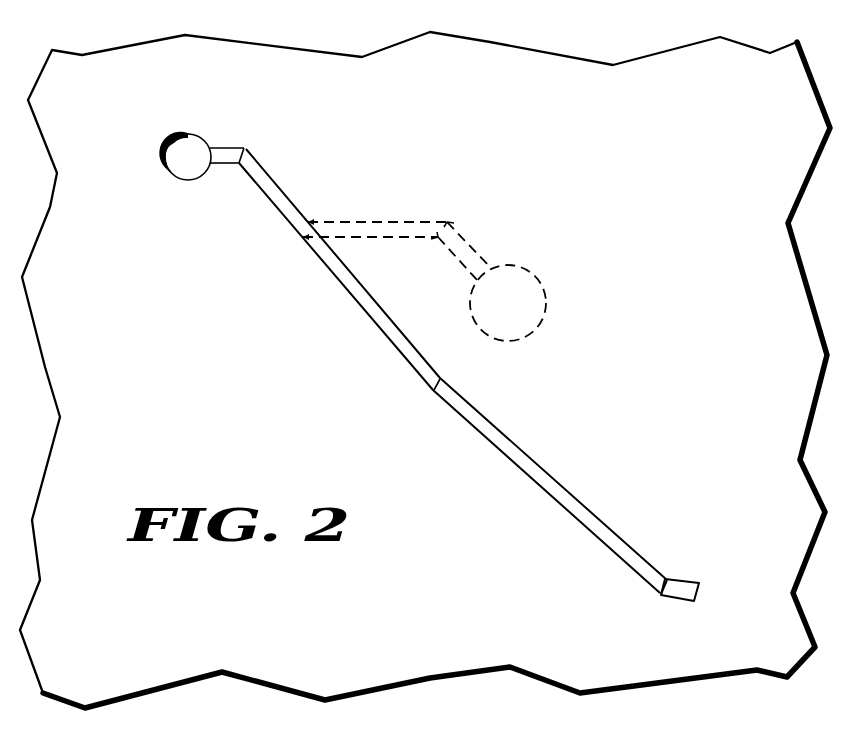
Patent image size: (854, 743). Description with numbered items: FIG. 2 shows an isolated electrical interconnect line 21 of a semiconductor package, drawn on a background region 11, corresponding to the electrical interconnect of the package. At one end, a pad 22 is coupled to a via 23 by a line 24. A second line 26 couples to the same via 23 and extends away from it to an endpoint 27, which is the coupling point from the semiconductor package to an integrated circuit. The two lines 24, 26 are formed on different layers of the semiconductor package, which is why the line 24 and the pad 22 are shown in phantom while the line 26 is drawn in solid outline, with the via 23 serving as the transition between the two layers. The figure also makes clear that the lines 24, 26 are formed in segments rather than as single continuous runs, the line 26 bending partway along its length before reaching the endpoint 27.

The panel 11 is at (276, 455).
The electrical interconnect line 21 is at (401, 118).
The pad 22 is at (544, 288).
The via 23 is at (194, 140).
The line 24 is at (390, 224).
The line 26 is at (503, 450).
The endpoint 27 is at (680, 580).